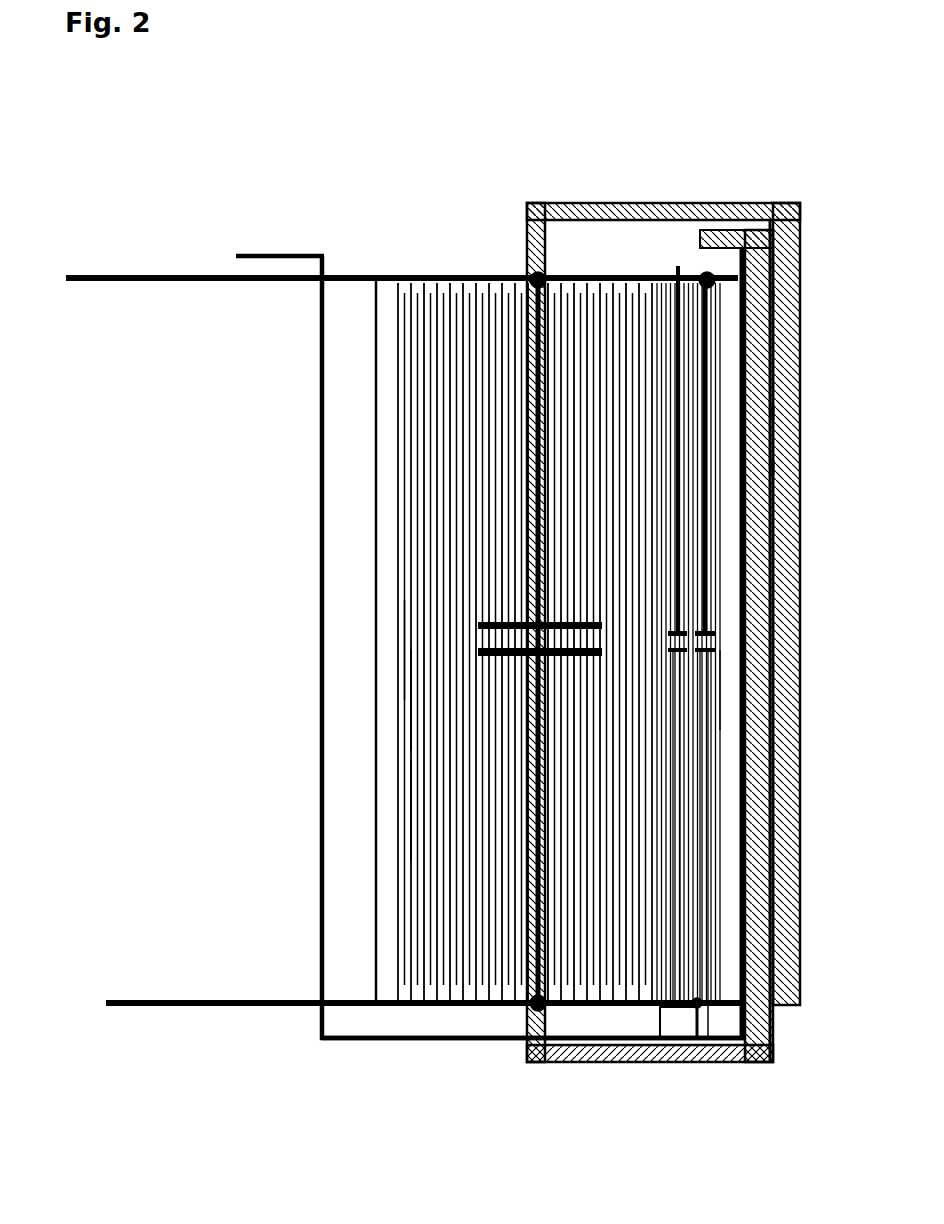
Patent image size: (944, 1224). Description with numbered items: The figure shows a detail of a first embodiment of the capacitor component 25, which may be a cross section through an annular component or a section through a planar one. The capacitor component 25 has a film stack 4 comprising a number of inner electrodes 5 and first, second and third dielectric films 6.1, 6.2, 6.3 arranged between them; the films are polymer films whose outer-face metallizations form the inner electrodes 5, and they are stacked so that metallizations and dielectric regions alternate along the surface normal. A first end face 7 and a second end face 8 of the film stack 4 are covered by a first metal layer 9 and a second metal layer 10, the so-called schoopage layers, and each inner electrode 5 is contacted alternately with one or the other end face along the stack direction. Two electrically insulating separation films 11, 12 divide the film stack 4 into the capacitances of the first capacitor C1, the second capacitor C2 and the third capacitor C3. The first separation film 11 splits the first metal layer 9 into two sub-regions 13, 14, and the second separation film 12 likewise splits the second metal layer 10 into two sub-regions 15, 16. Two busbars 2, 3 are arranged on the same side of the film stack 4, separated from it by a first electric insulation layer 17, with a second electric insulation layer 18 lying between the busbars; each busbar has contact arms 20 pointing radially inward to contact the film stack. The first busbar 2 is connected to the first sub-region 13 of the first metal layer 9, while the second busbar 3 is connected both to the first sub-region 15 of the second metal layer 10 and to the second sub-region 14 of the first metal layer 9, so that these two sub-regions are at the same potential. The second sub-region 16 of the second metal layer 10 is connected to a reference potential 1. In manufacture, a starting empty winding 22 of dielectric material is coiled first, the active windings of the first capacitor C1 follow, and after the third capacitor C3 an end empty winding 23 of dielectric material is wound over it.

The reference potential 1 is at (258, 256).
The first busbar 2 is at (786, 232).
The second busbar 3 is at (752, 230).
The film stack 4 is at (360, 483).
The inner electrodes 5 is at (410, 795).
The first dielectric films 6.1 is at (410, 690).
The second dielectric films 6.2 is at (657, 1012).
The third dielectric films 6.3 is at (708, 1010).
The first end face 7 is at (437, 228).
The second end face 8 is at (497, 1060).
The first metal layer 9 is at (598, 274).
The second metal layer 10 is at (312, 1003).
The first separation film 11 is at (676, 266).
The second separation film 12 is at (663, 1012).
The first sub-region of the first metal layer 13 is at (432, 283).
The second sub-region of the first metal layer 14 is at (773, 295).
The first sub-region of the second metal layer 15 is at (436, 1003).
The second sub-region of the second metal layer 16 is at (700, 1008).
The first electric insulation layer 17 is at (770, 418).
The second electric insulation layer 18 is at (770, 465).
The contact arms 20 is at (560, 203).
The starting empty winding 22 is at (385, 618).
The end empty winding 23 is at (725, 690).
The capacitor component 25 is at (345, 140).
The first capacitor C1 is at (532, 278).
The second capacitor C2 is at (670, 268).
The third capacitor C3 is at (702, 248).